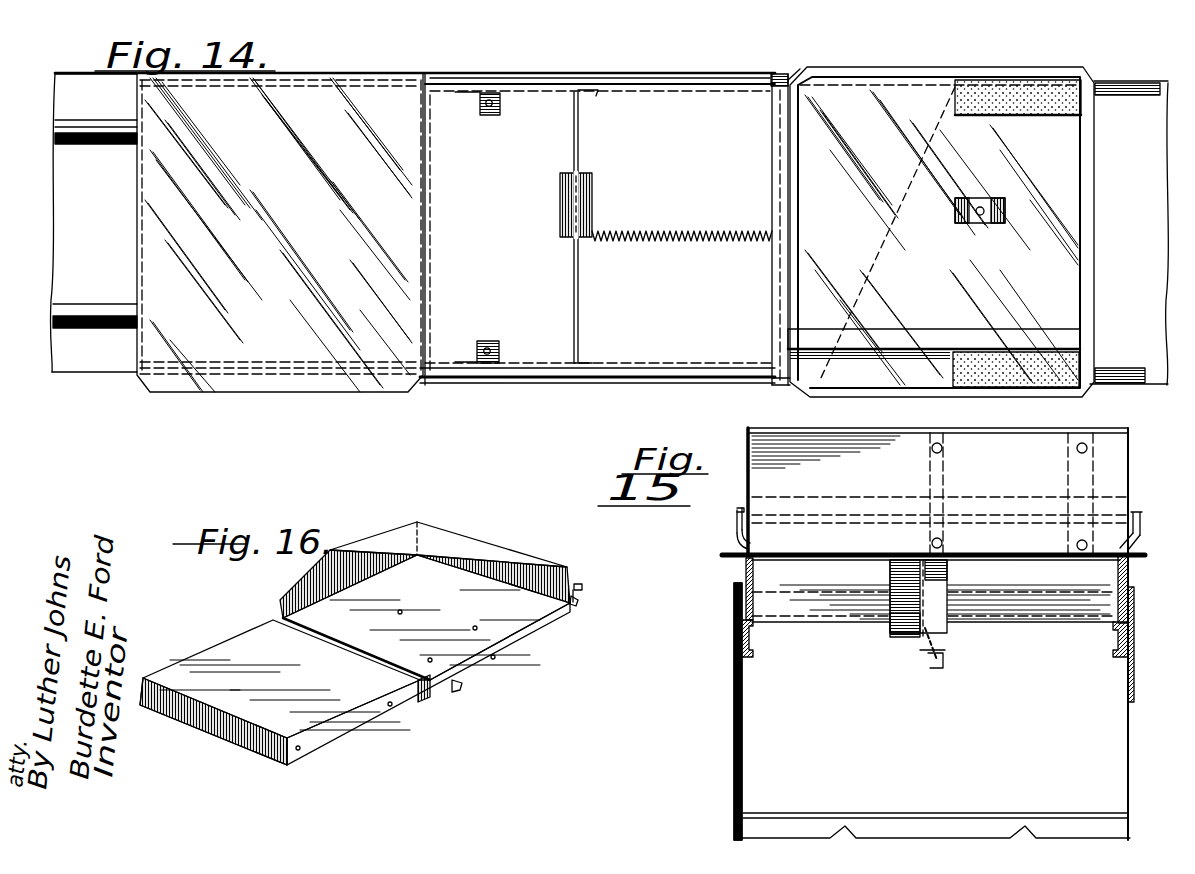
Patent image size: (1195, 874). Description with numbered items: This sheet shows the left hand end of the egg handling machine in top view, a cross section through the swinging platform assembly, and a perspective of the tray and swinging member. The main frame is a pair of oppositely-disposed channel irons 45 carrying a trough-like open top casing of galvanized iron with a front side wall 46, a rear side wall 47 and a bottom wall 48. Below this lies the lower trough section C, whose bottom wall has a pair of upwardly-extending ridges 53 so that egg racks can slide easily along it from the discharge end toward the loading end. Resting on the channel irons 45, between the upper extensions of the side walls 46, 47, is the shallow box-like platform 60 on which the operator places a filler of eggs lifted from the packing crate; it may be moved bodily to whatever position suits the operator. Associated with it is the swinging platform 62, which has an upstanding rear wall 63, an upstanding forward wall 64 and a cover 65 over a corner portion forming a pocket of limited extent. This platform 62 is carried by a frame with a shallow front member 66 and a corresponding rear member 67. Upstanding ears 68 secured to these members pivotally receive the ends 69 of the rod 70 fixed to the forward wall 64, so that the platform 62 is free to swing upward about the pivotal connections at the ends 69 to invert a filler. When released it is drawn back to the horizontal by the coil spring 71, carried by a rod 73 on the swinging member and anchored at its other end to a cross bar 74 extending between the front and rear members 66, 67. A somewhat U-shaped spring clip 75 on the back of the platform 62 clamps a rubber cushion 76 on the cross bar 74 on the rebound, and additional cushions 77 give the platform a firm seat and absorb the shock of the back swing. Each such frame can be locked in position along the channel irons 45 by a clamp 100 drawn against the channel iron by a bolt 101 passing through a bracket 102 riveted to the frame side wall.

In FIG. 14, the trough section C is at (95, 357).
In FIG. 15, the trough section C is at (970, 826).
In FIG. 14, the channel irons 45 is at (456, 94).
In FIG. 15, the channel irons 45 is at (754, 640).
In FIG. 14, the front side wall 46 is at (458, 386).
In FIG. 15, the front side wall 46 is at (733, 612).
In FIG. 14, the rear side wall 47 is at (492, 76).
In FIG. 15, the rear side wall 47 is at (1136, 612).
In FIG. 14, the bottom wall 48 is at (496, 284).
In FIG. 15, the bottom wall 48 is at (912, 812).
In FIG. 14, the ridges 53 is at (97, 121).
In FIG. 15, the ridges 53 is at (848, 830).
In FIG. 14, the platform 60 is at (342, 248).
In FIG. 16, the platform 60 is at (316, 682).
In FIG. 14, the platform 62 is at (942, 232).
In FIG. 16, the platform 62 is at (426, 617).
In FIG. 16, the upstanding rear wall 63 is at (330, 585).
In FIG. 16, the upstanding forward wall 64 is at (545, 565).
In FIG. 14, the cover 65 is at (888, 224).
In FIG. 16, the cover 65 is at (440, 545).
In FIG. 14, the front member 66 is at (690, 363).
In FIG. 15, the front member 66 is at (744, 575).
In FIG. 16, the front member 66 is at (520, 645).
In FIG. 14, the rear member 67 is at (663, 92).
In FIG. 15, the rear member 67 is at (1128, 588).
In FIG. 16, the rear member 67 is at (283, 618).
In FIG. 14, the upstanding ears 68 is at (779, 388).
In FIG. 15, the upstanding ears 68 is at (735, 538).
In FIG. 16, the upstanding ears 68 is at (580, 602).
In FIG. 15, the rod ends 69 is at (735, 513).
In FIG. 16, the rod ends 69 is at (580, 596).
In FIG. 15, the rod 70 is at (745, 508).
In FIG. 16, the rod 70 is at (578, 586).
In FIG. 14, the coil spring 71 is at (660, 240).
In FIG. 15, the coil spring 71 is at (942, 652).
In FIG. 14, the rod 73 is at (793, 226).
In FIG. 15, the rod 73 is at (945, 665).
In FIG. 14, the cross bar 74 is at (580, 276).
In FIG. 15, the cross bar 74 is at (1013, 615).
In FIG. 14, the spring clip 75 is at (1007, 212).
In FIG. 15, the spring clip 75 is at (899, 640).
In FIG. 14, the rubber cushion 76 is at (592, 207).
In FIG. 15, the rubber cushion 76 is at (948, 575).
In FIG. 14, the cushions 77 is at (1007, 107).
In FIG. 15, the cushions 77 is at (730, 562).
In FIG. 16, the clamp 100 is at (456, 692).
In FIG. 14, the bolt 101 is at (502, 102).
In FIG. 14, the bracket 102 is at (492, 116).